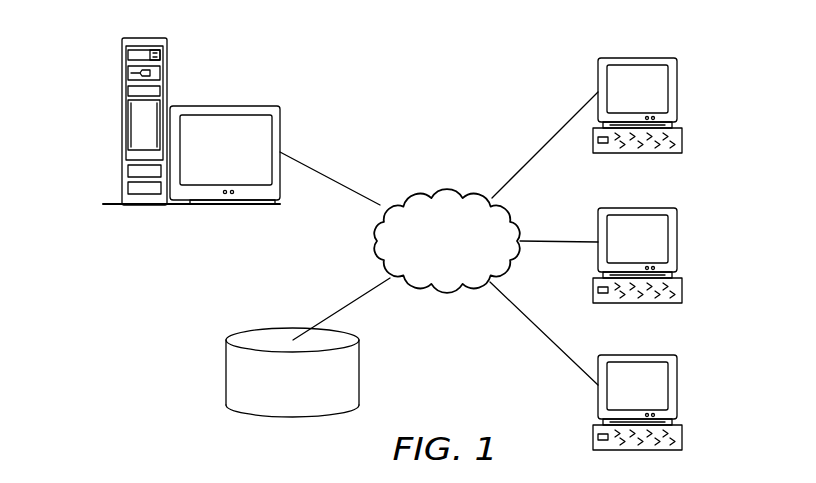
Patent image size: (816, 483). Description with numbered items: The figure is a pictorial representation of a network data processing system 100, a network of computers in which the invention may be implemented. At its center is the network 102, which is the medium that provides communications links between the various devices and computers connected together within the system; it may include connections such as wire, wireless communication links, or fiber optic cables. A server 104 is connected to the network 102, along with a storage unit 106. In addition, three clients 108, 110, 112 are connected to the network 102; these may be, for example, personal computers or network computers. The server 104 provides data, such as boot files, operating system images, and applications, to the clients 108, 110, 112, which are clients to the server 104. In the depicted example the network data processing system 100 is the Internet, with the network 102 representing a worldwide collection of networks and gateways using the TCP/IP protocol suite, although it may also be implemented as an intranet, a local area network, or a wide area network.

The network data processing system 100 is at (499, 70).
The network 102 is at (418, 190).
The server 104 is at (122, 122).
The storage unit 106 is at (226, 375).
The client 108 is at (677, 90).
The client 110 is at (677, 242).
The client 112 is at (677, 388).